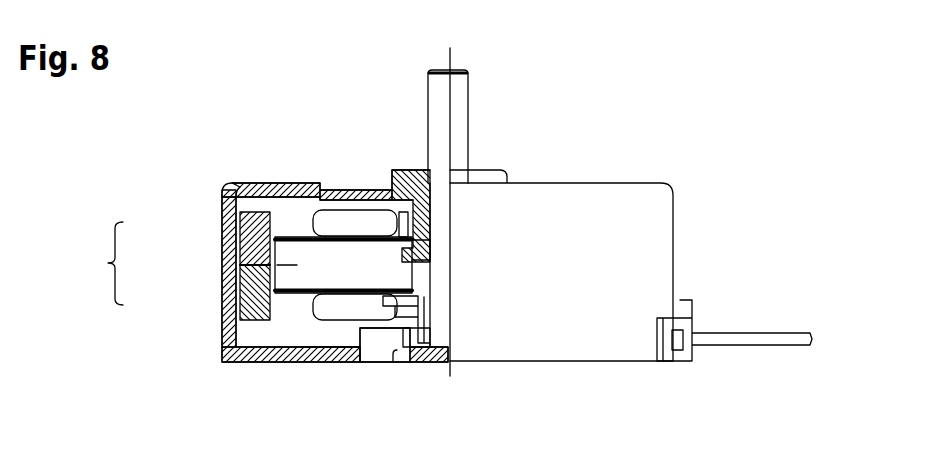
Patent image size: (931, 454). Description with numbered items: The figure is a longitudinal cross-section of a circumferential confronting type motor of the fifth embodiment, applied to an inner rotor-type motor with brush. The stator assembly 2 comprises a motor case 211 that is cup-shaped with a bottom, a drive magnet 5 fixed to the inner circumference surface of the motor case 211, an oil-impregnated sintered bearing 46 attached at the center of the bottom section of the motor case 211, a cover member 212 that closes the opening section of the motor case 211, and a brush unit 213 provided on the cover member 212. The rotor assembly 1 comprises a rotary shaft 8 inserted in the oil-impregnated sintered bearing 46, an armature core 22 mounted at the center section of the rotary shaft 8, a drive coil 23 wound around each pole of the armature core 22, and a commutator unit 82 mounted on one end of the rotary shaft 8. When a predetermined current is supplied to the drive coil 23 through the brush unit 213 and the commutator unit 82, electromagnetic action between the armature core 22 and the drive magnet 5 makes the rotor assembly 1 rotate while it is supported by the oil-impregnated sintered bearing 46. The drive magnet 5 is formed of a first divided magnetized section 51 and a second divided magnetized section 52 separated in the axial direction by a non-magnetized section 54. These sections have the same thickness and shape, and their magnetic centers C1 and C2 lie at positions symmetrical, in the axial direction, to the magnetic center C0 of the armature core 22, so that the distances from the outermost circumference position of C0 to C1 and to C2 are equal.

The rotor assembly 1 is at (340, 333).
The stator assembly 2 is at (222, 347).
The motor case 211 is at (243, 183).
The cover member 212 is at (259, 362).
The brush unit 213 is at (392, 348).
The armature core 22 is at (357, 275).
The drive coil 23 is at (343, 220).
The oil-impregnated sintered bearing 46 is at (415, 170).
The drive magnet 5 is at (178, 266).
The first divided magnetized section 51 is at (252, 225).
The second divided magnetized section 52 is at (245, 302).
The non-magnetized section 54 is at (250, 267).
The rotary shaft 8 is at (458, 112).
The commutator unit 82 is at (427, 300).
The magnetic center of the armature core C0 is at (300, 265).
The magnetic center of the first divided magnetized section C1 is at (344, 222).
The magnetic center of the second divided magnetized section C2 is at (337, 310).